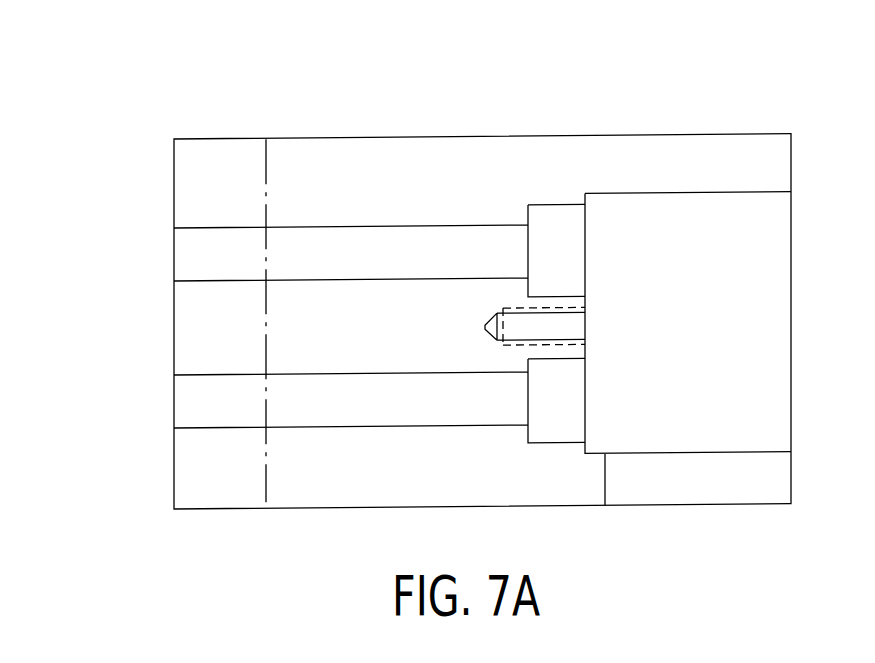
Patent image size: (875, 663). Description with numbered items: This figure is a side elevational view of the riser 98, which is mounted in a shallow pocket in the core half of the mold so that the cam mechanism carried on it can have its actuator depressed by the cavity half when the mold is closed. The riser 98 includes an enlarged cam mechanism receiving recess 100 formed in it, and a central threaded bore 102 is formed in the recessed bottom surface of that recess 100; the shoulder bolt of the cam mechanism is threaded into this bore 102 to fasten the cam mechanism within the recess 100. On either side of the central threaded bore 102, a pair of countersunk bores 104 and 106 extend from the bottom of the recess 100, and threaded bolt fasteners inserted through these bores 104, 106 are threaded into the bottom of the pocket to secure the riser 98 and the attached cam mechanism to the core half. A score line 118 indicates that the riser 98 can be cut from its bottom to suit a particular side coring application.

The riser 98 is at (634, 103).
The cam mechanism receiving recess 100 is at (760, 194).
The central threaded bore 102 is at (577, 321).
The countersunk bore 104 is at (473, 225).
The countersunk bore 106 is at (462, 428).
The score line 118 is at (257, 491).